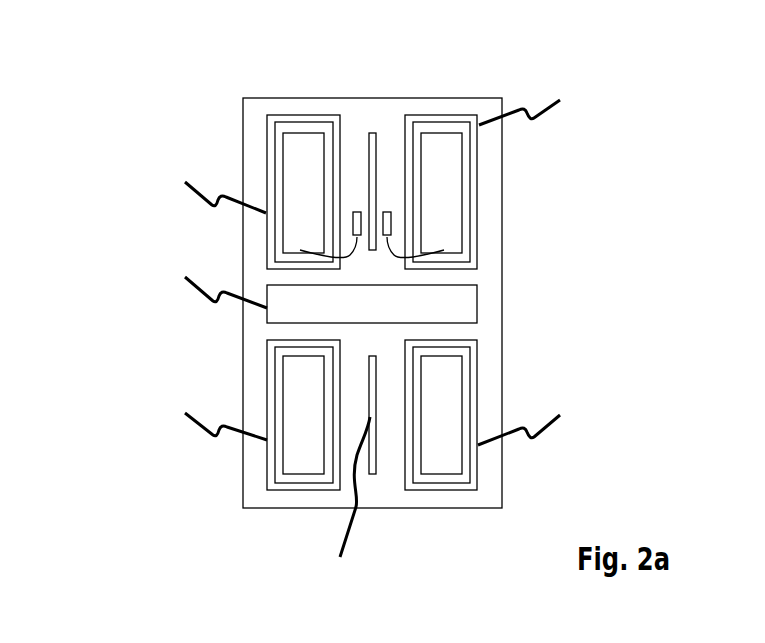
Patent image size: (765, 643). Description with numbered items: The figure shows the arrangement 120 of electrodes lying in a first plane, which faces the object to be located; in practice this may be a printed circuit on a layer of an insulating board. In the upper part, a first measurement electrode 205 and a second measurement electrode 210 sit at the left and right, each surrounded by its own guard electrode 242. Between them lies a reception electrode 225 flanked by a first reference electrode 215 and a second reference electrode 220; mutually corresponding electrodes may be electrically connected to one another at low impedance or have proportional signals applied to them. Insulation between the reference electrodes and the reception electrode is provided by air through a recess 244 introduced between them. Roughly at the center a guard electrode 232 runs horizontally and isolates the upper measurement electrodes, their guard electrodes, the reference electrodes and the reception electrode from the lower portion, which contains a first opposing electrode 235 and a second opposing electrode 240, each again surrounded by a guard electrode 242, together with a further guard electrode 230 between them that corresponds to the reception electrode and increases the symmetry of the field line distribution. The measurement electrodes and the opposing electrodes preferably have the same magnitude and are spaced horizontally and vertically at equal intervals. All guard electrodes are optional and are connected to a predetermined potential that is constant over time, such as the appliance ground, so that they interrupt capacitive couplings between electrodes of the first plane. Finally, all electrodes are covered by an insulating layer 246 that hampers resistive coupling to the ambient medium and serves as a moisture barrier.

The arrangement of electrodes 120 is at (150, 83).
The first measurement electrode 205 is at (303, 147).
The second measurement electrode 210 is at (437, 147).
The first reference electrode 215 is at (356, 212).
The second reference electrode 220 is at (387, 212).
The reception electrode 225 is at (372, 133).
The further guard electrode 230 is at (373, 473).
The horizontal guard electrode 232 is at (458, 300).
The first opposing electrode 235 is at (303, 463).
The second opposing electrode 240 is at (441, 463).
The guard electrode 242 is at (272, 148).
The recess 244 is at (300, 250).
The insulating layer 246 is at (502, 335).